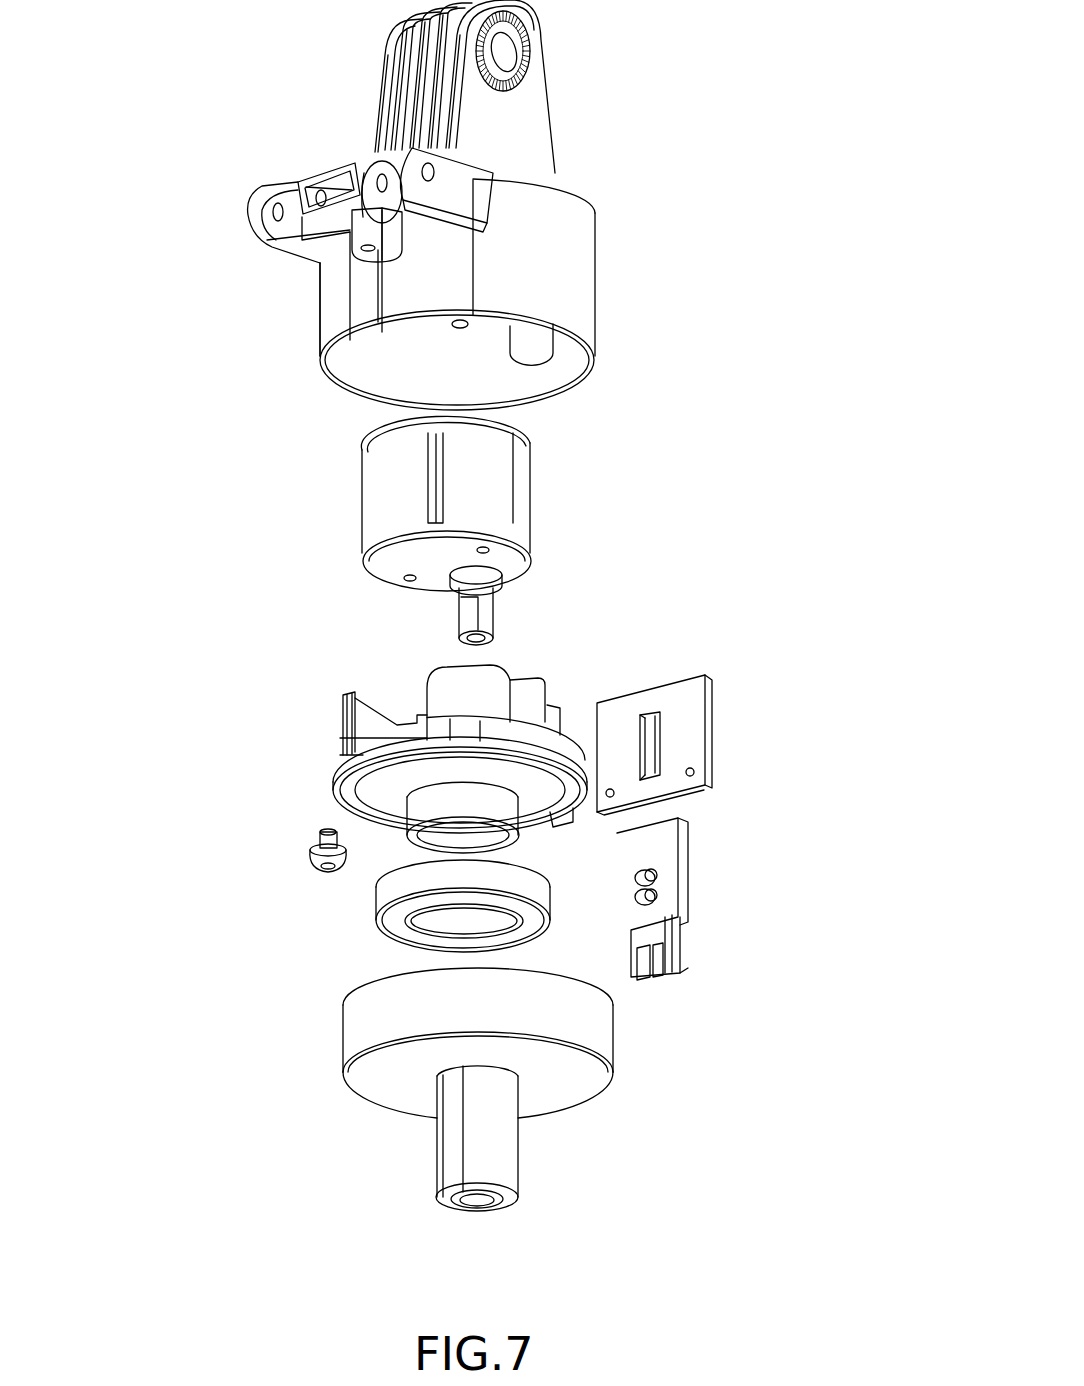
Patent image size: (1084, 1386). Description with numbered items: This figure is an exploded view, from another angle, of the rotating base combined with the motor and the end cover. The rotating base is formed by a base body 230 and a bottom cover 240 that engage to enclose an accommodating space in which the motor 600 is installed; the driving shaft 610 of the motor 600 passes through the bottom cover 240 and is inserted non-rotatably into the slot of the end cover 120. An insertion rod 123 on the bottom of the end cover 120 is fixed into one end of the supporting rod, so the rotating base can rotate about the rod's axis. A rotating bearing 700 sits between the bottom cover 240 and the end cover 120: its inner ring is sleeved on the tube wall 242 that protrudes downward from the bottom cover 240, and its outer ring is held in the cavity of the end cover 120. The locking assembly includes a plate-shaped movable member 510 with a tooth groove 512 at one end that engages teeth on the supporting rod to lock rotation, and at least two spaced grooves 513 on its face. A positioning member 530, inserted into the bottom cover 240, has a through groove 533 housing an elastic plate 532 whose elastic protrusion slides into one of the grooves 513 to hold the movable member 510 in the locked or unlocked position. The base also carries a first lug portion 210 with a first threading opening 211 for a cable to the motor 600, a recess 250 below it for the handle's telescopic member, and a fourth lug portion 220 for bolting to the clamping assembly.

The end cover 120 is at (363, 1018).
The insertion rod 123 is at (503, 1145).
The first lug portion 210 is at (302, 217).
The first threading opening 211 is at (343, 183).
The fourth lug portion 220 is at (510, 52).
The base body 230 is at (578, 268).
The bottom cover 240 is at (350, 713).
The tube wall 242 is at (427, 837).
The recess 250 is at (368, 250).
The movable member 510 is at (670, 843).
The tooth groove 512 is at (660, 977).
The grooves 513 is at (662, 897).
The positioning member 530 is at (685, 735).
The elastic plate 532 is at (652, 760).
The through groove 533 is at (637, 750).
The motor 600 is at (493, 493).
The driving shaft 610 is at (500, 602).
The rotating bearing 700 is at (387, 922).